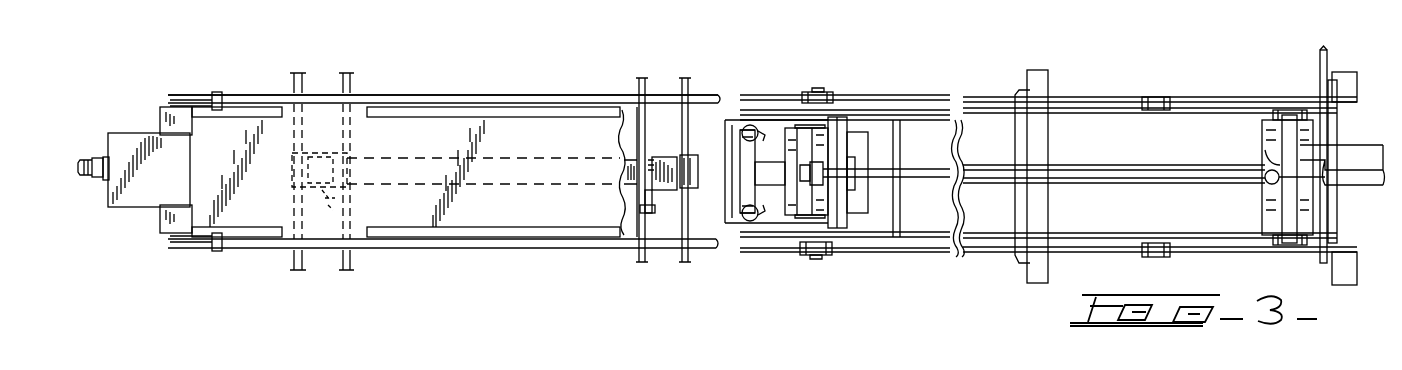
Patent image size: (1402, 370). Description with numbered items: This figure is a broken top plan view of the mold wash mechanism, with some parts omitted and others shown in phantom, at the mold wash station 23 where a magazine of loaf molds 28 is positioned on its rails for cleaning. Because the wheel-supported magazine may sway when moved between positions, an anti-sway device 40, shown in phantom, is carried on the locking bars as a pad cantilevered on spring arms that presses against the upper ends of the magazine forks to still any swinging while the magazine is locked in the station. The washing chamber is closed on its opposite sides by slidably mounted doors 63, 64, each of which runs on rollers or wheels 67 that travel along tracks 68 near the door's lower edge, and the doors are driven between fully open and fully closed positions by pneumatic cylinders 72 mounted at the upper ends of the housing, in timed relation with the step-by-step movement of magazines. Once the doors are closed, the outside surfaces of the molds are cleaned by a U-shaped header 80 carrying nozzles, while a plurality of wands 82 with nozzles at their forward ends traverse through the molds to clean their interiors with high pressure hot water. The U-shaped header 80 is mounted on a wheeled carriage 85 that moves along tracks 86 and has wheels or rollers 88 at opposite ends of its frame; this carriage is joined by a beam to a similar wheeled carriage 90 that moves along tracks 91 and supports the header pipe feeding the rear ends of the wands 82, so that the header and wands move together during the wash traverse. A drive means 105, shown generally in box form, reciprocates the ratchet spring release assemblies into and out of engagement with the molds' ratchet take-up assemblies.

The mold wash station 23 is at (500, 263).
The magazine of loaf molds 28 is at (520, 158).
The anti-sway device 40 is at (324, 205).
The door 63 is at (890, 243).
The door 64 is at (877, 107).
The rollers or wheels 67 is at (1166, 90).
The tracks 68 is at (1108, 100).
The pneumatic cylinders 72 is at (712, 95).
The U-shaped header 80 is at (748, 226).
The wands 82 is at (913, 178).
The wheeled carriage 85 is at (780, 140).
The tracks 86 is at (776, 120).
The wheels or rollers 88 is at (824, 117).
The wheeled carriage 90 is at (1255, 130).
The tracks 91 is at (1250, 113).
The drive means 105 is at (128, 148).